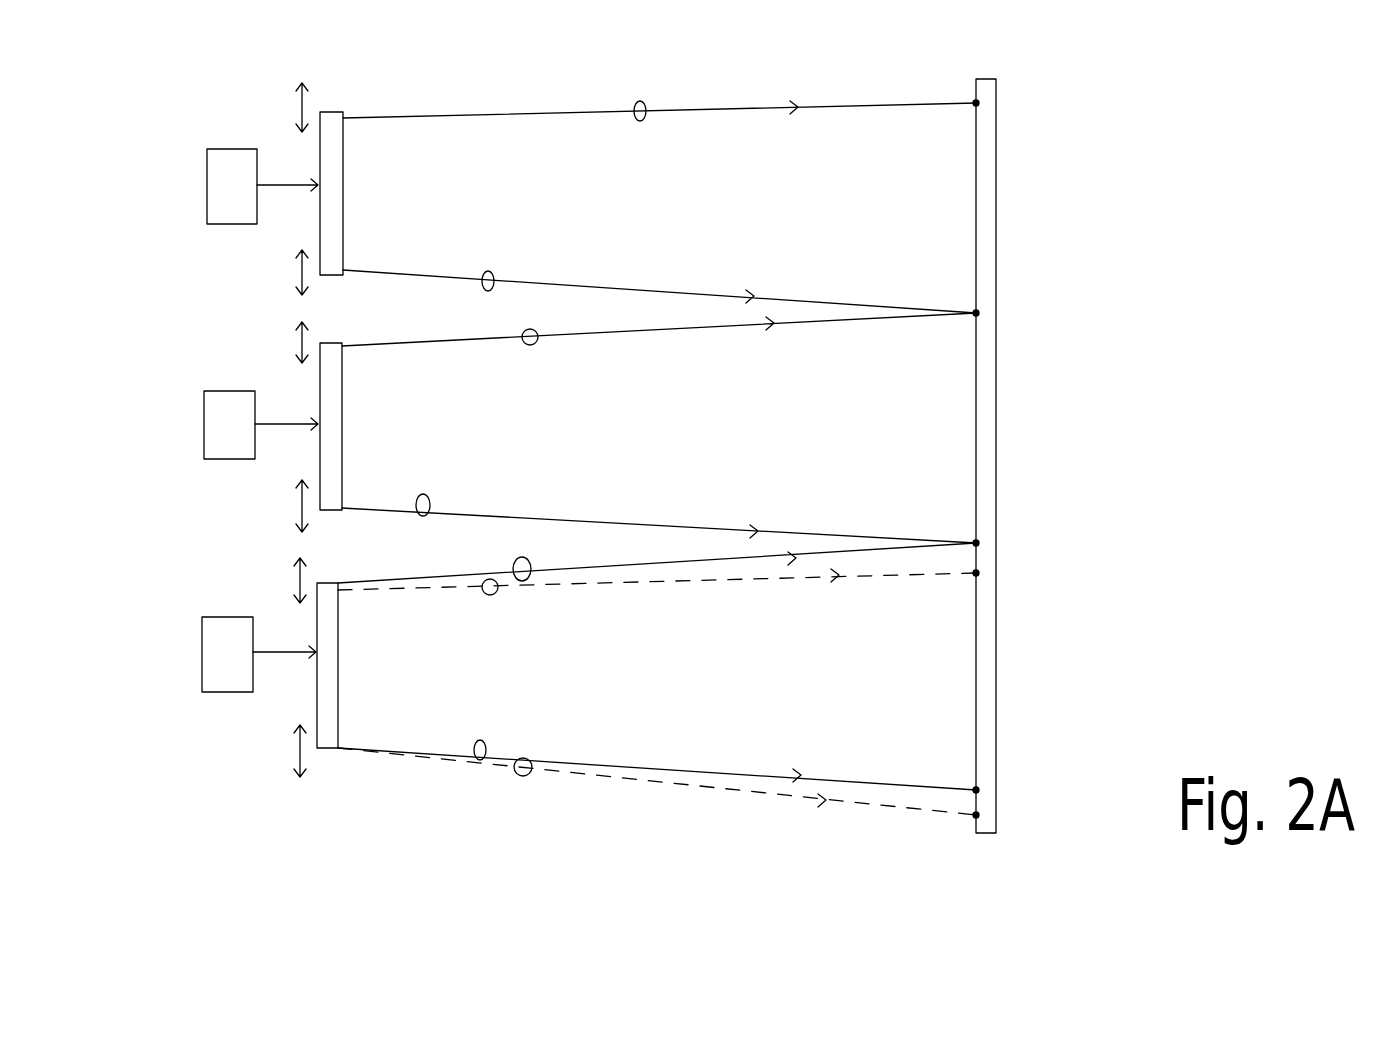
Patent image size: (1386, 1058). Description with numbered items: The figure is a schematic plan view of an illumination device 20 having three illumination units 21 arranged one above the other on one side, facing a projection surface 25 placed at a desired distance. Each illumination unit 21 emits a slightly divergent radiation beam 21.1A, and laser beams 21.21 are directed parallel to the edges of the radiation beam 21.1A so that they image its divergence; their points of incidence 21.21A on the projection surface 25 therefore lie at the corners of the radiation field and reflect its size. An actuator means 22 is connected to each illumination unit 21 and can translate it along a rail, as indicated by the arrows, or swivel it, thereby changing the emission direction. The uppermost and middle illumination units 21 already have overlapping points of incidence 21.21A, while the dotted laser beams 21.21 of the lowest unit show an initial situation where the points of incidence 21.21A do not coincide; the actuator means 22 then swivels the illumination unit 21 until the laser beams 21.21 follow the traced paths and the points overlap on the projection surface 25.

The illumination device 20 is at (1216, 54).
The illumination unit 21 is at (330, 185).
The radiation beam 21.1A is at (687, 209).
The laser beam 21.21 is at (648, 103).
The point of incidence 21.21A is at (978, 104).
The actuator means 22 is at (227, 185).
The projection surface 25 is at (998, 189).